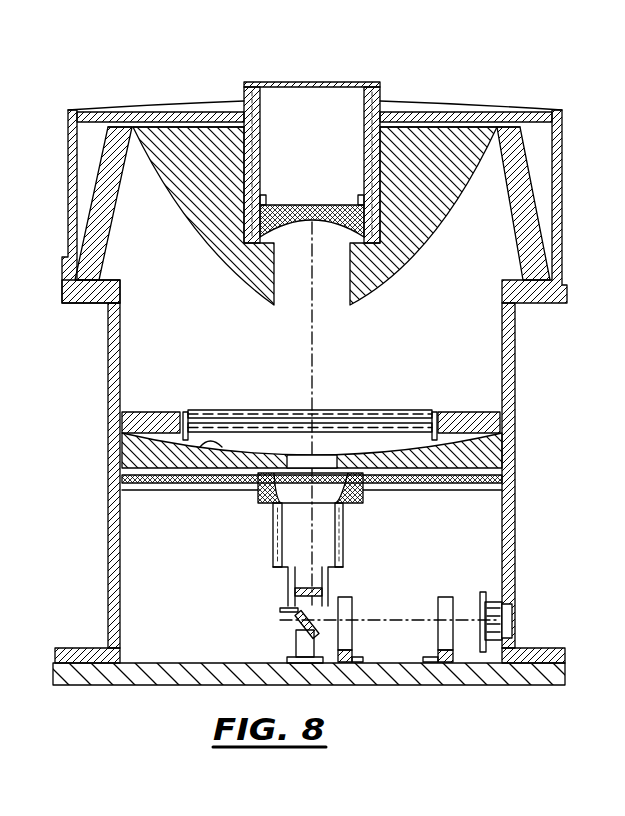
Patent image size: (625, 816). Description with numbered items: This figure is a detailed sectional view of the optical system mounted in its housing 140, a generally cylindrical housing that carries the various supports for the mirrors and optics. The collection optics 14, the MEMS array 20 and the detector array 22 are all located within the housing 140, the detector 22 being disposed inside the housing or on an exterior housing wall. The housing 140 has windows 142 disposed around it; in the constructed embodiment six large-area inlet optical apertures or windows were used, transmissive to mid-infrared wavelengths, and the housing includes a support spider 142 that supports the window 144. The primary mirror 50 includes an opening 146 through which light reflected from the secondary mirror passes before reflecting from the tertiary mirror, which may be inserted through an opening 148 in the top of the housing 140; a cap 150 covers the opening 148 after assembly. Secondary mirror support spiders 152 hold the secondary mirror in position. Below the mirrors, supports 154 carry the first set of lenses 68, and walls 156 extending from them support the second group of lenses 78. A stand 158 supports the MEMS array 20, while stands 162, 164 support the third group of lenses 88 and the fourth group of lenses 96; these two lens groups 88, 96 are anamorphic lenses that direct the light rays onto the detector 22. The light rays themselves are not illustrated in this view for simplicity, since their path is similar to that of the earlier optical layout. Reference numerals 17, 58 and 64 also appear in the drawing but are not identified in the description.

The window 142 is at (62, 175).
The window 144 is at (72, 253).
The housing upper portion 17 is at (502, 193).
The opening 146 is at (312, 352).
The cone blocks 64 is at (272, 205).
The opening 148 is at (300, 132).
The cap 150 is at (336, 84).
The primary mirror 50 is at (462, 271).
The collection optics 14 is at (540, 243).
The housing 140 is at (514, 347).
The stand 164 is at (476, 680).
The secondary mirror support spider 152 is at (490, 420).
The stand 158 is at (167, 414).
The lens plate 58 is at (200, 440).
The support 154 is at (122, 497).
The first set of lenses 68 is at (272, 527).
The wall 156 is at (273, 555).
The second group of lenses 78 is at (293, 623).
The stand 162 is at (355, 663).
The third group of lenses 88 is at (355, 636).
The fourth group of lenses 96 is at (440, 630).
The detector array 22 is at (502, 612).
The MEMS array 20 is at (122, 733).